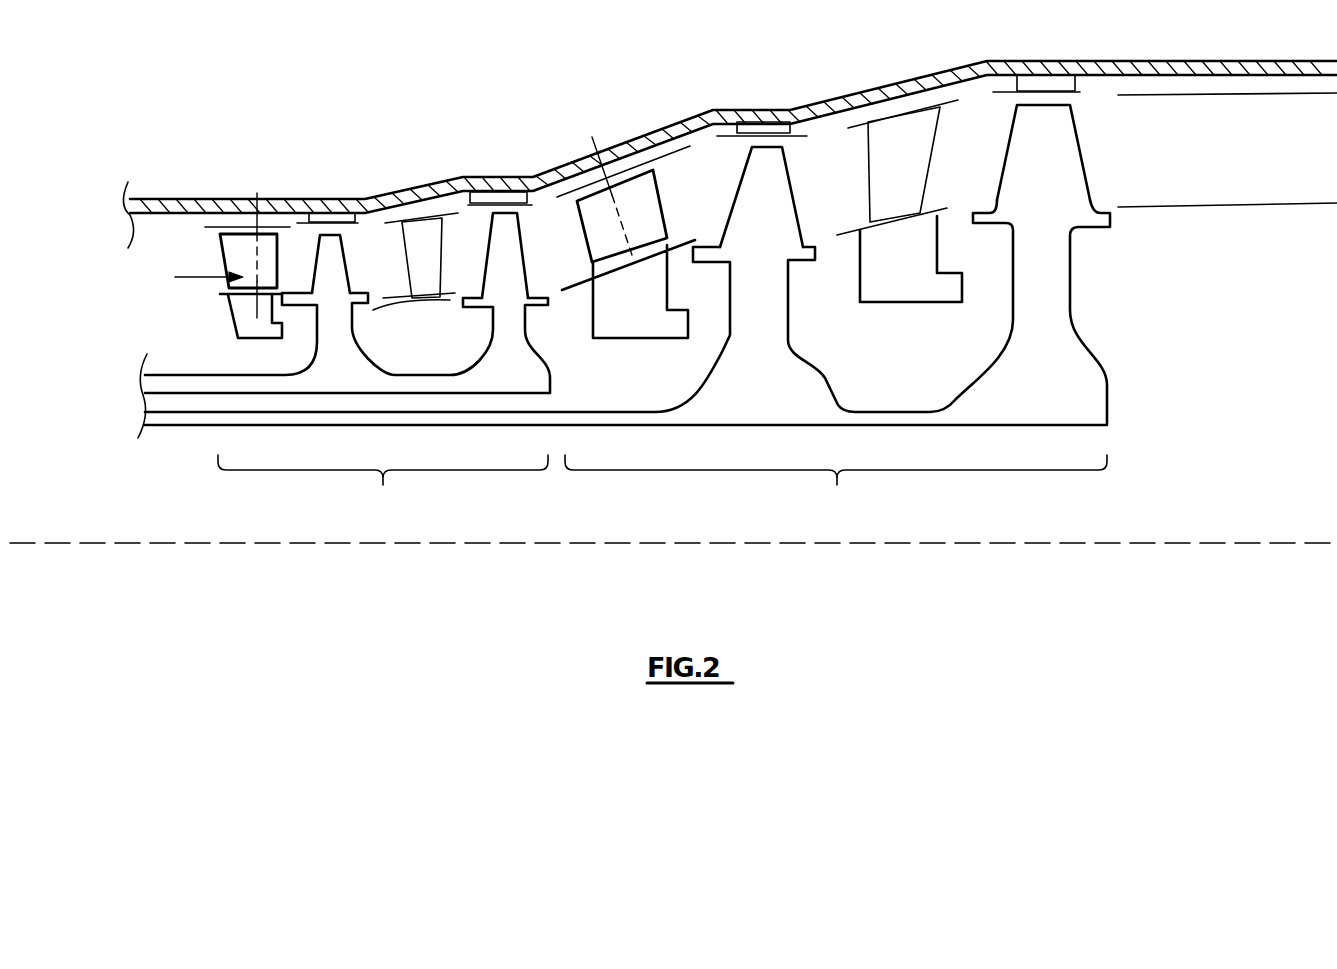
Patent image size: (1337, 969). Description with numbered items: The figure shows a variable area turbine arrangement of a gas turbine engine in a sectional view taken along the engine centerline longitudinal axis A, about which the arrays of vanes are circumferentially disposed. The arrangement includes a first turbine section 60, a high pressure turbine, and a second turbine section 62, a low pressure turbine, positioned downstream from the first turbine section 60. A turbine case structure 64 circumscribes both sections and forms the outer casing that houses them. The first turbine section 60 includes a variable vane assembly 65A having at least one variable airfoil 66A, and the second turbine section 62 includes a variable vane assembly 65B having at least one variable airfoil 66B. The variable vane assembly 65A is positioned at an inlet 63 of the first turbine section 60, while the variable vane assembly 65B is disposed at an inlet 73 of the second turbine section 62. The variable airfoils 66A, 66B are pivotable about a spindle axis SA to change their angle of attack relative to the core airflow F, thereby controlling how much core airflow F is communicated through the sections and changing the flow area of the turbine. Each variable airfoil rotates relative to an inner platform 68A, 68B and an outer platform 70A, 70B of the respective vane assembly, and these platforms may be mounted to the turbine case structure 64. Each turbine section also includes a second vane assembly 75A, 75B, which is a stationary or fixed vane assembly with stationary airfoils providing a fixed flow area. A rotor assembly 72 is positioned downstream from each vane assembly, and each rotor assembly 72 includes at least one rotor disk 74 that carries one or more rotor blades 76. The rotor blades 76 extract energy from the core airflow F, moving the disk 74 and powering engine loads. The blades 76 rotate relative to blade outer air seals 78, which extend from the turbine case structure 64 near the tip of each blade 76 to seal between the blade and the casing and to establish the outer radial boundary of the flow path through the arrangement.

The first turbine section 60 is at (383, 489).
The second turbine section 62 is at (836, 489).
The inlet 63 is at (173, 285).
The turbine case structure 64 is at (730, 128).
The variable vane assembly 65A is at (268, 197).
The variable vane assembly 65B is at (647, 143).
The variable airfoil 66A is at (235, 248).
The variable airfoil 66B is at (638, 197).
The inner platform 68A is at (230, 297).
The inner platform 68B is at (578, 293).
The outer platform 70A is at (245, 227).
The outer platform 70B is at (615, 195).
The rotor assembly 72 is at (353, 283).
The inlet 73 is at (573, 237).
The rotor disk 74 is at (358, 360).
The second vane assembly 75A is at (418, 228).
The second vane assembly 75B is at (912, 133).
The rotor blade 76 is at (330, 242).
The blade outer air seal 78 is at (328, 240).
The spindle axis SA is at (253, 273).
The core airflow F is at (200, 277).
The engine centerline longitudinal axis A is at (622, 545).